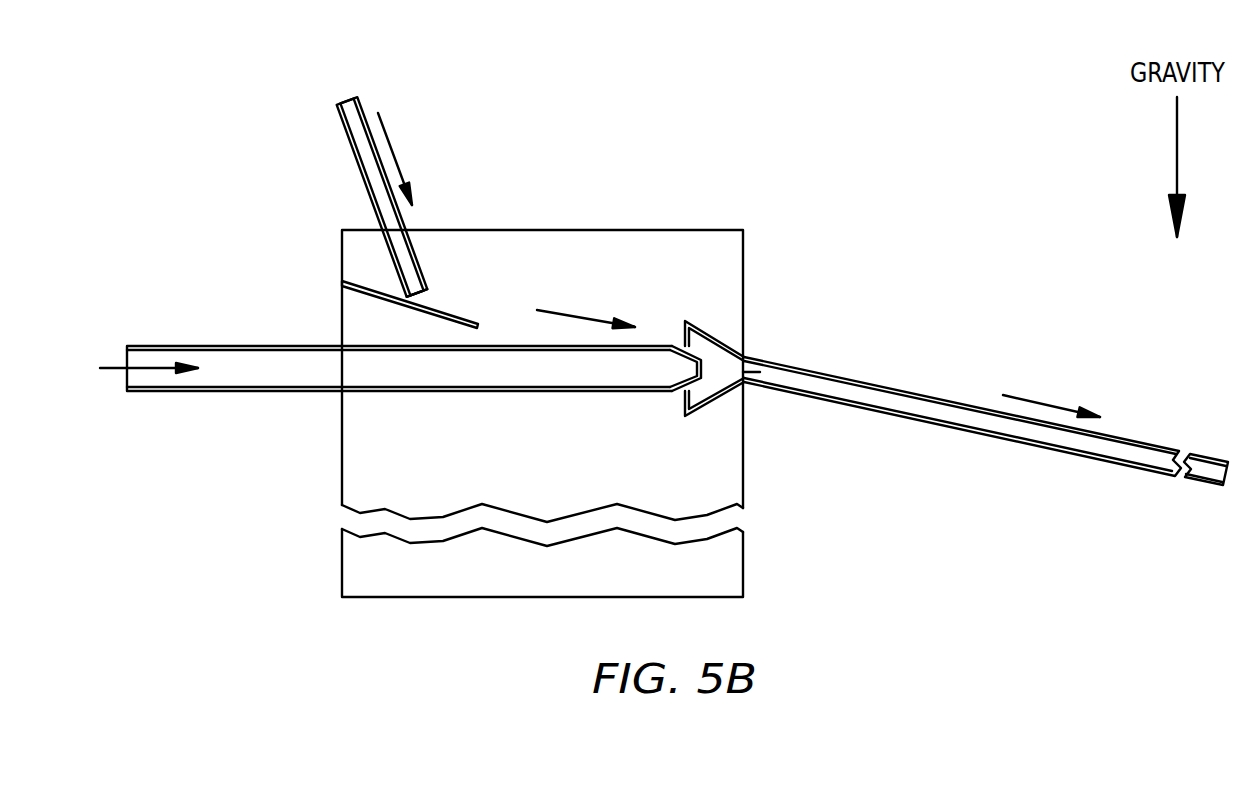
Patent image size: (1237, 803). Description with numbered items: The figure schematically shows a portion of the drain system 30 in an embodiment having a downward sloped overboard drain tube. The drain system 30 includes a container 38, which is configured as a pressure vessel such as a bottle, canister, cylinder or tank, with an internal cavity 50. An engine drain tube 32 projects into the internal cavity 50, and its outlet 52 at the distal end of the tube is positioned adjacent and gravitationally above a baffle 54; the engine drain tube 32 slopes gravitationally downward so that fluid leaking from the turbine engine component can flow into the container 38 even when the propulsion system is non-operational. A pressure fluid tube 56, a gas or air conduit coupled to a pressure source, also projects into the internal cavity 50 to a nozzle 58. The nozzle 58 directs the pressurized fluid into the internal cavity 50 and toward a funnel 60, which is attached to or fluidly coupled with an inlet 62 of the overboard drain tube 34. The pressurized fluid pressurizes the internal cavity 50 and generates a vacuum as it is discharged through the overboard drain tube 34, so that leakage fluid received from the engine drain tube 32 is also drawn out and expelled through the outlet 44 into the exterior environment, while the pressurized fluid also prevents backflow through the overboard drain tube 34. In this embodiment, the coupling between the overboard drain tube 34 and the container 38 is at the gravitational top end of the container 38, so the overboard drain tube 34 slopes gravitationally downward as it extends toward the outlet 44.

The drain system 30 is at (843, 128).
The engine drain tube 32 is at (355, 143).
The overboard drain tube 34 is at (910, 425).
The container 38 is at (645, 229).
The outlet 44 is at (1229, 479).
The internal cavity 50 is at (590, 268).
The outlet 52 is at (421, 297).
The baffle 54 is at (375, 299).
The pressure fluid tube 56 is at (210, 347).
The nozzle 58 is at (680, 389).
The funnel 60 is at (708, 402).
The inlet 62 is at (760, 372).